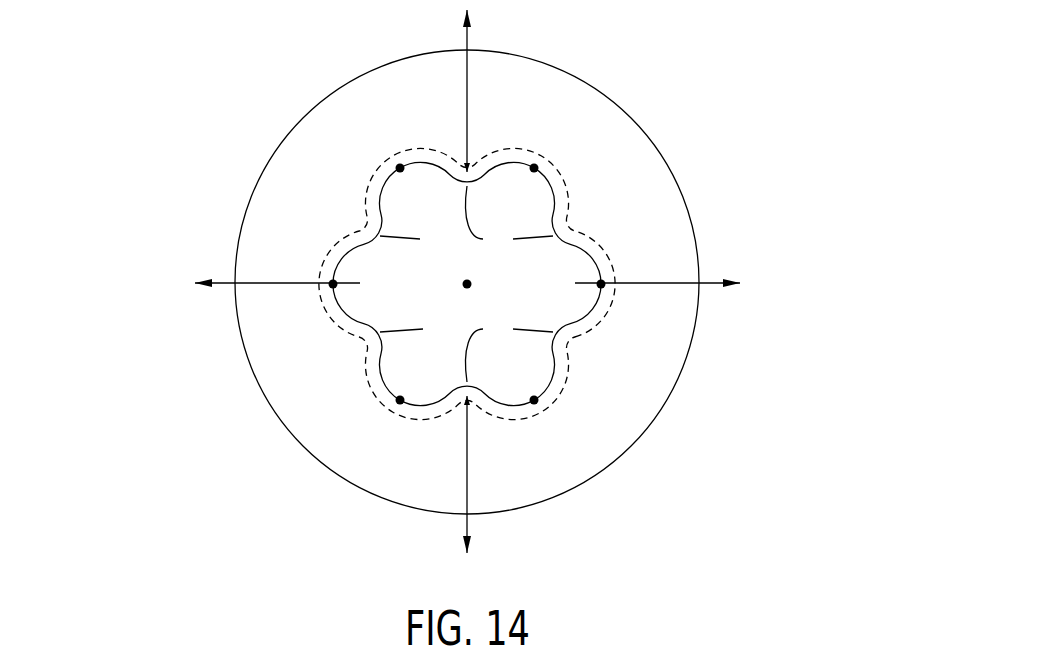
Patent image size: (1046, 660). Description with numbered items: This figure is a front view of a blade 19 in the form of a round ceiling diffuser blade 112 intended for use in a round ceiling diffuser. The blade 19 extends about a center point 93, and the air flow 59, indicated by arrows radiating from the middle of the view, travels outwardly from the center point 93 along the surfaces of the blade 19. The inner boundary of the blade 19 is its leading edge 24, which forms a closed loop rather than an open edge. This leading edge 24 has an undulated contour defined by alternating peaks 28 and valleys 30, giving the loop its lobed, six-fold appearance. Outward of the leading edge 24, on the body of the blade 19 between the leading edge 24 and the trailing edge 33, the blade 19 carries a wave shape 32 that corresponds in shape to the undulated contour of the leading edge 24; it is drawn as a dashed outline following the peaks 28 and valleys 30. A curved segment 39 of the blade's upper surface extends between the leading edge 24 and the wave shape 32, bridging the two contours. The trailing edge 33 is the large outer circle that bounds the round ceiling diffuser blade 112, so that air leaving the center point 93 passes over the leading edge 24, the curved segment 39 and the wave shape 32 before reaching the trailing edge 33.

The blade 19 is at (607, 128).
The round ceiling diffuser blade 112 is at (493, 282).
The trailing edge 33 is at (683, 373).
The leading edge 24 is at (382, 228).
The wave shape 32 is at (556, 166).
The curved segment 39 is at (333, 317).
The peaks 28 is at (466, 284).
The valleys 30 is at (411, 180).
The center point 93 is at (465, 286).
The air flow 59 is at (467, 42).